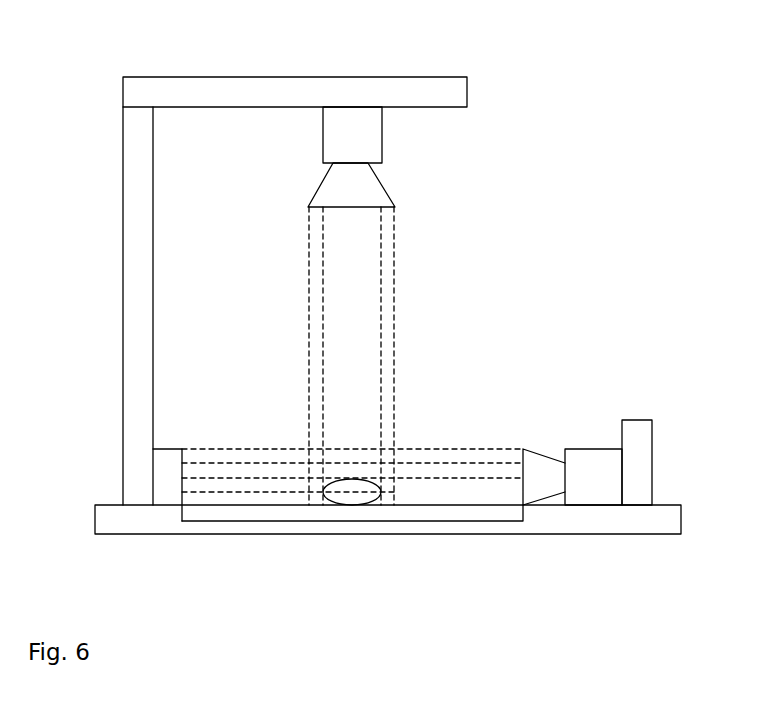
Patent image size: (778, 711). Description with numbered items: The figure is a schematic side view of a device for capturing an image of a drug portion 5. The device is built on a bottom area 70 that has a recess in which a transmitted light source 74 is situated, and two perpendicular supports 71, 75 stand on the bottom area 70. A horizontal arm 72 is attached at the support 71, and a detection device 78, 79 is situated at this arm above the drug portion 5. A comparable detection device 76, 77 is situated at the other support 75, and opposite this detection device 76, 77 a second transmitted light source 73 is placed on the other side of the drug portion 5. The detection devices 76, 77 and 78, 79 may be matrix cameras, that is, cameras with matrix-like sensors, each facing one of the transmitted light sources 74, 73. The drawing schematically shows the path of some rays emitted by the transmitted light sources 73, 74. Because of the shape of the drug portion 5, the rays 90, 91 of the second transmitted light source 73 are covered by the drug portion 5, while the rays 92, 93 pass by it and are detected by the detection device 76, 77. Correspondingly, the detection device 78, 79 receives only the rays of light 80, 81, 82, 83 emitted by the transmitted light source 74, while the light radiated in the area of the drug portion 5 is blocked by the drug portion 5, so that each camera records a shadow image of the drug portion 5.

The drug portion 5 is at (352, 492).
The bottom area 70 is at (138, 520).
The support 71 is at (138, 120).
The horizontal arm 72 is at (452, 93).
The second transmitted light source 73 is at (165, 478).
The transmitted light source 74 is at (293, 520).
The support 75 is at (637, 477).
The detection device 76 is at (595, 477).
The detection device 77 is at (537, 477).
The detection device 78 is at (352, 135).
The detection device 79 is at (350, 193).
The ray of light 80 is at (395, 237).
The ray of light 81 is at (381, 279).
The ray of light 82 is at (323, 279).
The ray of light 83 is at (308, 235).
The ray 90 is at (196, 490).
The ray 91 is at (220, 478).
The ray 92 is at (204, 462).
The ray 93 is at (246, 449).